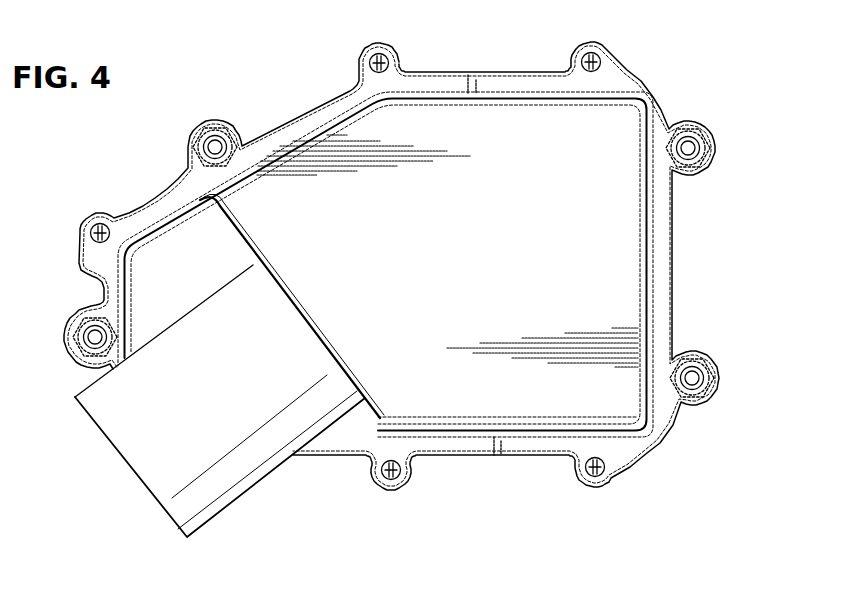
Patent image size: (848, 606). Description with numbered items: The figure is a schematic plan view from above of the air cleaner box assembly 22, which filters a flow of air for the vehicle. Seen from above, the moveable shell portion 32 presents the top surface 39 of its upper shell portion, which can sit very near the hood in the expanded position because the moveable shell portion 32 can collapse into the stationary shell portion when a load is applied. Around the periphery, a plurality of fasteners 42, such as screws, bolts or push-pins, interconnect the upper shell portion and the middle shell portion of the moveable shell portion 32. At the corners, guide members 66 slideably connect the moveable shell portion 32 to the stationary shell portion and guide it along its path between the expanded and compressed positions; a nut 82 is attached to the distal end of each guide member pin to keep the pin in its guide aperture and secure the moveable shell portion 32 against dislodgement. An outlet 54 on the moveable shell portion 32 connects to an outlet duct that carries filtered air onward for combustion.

The air cleaner box assembly 22 is at (663, 56).
The moveable shell portion 32 is at (610, 257).
The top surface 39 is at (480, 252).
The fasteners 42 is at (384, 57).
The outlet 54 is at (125, 442).
The guide members 66 is at (215, 140).
The nut 82 is at (200, 137).